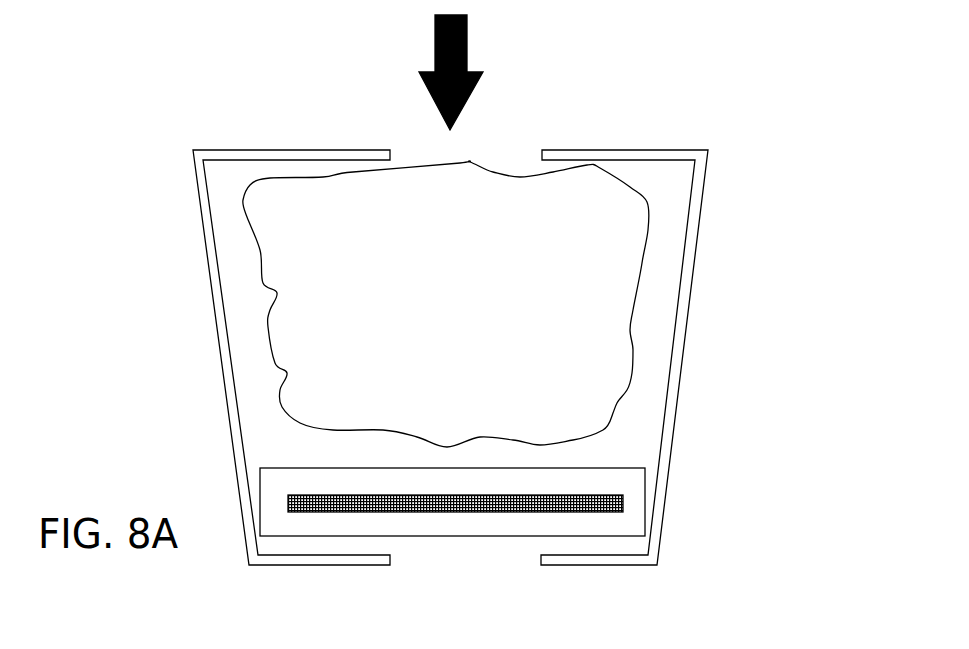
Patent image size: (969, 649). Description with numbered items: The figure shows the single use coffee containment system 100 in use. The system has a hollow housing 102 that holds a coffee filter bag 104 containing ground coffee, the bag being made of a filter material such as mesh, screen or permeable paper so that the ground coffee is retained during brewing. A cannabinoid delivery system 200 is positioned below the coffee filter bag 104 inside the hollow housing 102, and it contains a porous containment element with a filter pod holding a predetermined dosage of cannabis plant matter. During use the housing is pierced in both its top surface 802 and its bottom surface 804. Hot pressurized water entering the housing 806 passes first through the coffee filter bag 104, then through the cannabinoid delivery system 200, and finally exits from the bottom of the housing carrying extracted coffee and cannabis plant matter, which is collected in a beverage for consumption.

The single use coffee containment system 100 is at (119, 128).
The hollow housing 102 is at (707, 208).
The coffee filter bag 104 is at (610, 361).
The cannabinoid delivery system 200 is at (660, 481).
The top surface 802 is at (536, 146).
The bottom surface 804 is at (531, 563).
The hot pressurized water entering the housing 806 is at (467, 42).